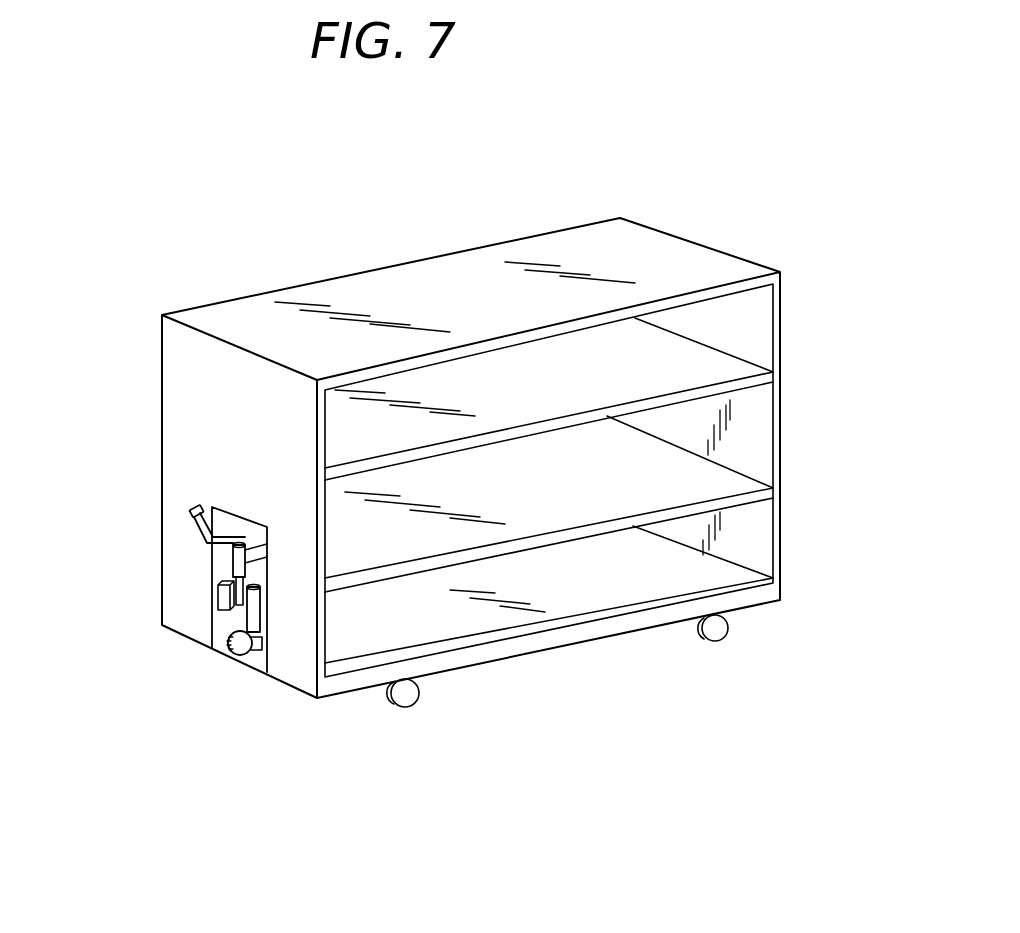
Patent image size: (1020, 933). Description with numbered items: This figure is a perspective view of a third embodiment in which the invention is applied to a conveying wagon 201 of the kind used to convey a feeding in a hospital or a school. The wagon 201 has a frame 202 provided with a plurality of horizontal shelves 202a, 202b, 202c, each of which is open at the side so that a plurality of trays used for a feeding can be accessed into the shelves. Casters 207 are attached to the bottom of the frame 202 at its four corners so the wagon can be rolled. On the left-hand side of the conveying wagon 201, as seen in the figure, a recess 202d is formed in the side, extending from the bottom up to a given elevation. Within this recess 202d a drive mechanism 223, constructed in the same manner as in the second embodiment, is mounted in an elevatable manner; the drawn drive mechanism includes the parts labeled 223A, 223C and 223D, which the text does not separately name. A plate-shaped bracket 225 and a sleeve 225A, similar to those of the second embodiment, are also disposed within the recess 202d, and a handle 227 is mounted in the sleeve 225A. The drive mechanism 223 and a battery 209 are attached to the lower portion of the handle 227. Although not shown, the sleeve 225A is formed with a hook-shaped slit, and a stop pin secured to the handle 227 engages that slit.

The conveying wagon 201 is at (210, 248).
The frame 202 is at (447, 286).
The horizontal shelf 202a is at (737, 367).
The horizontal shelf 202b is at (727, 479).
The horizontal shelf 202c is at (730, 583).
The recess 202d is at (258, 660).
The casters 207 is at (717, 636).
The battery 209 is at (220, 606).
The drive mechanism 223 is at (240, 668).
The pipe 223A is at (262, 618).
The knob 223C is at (227, 657).
The connector 223D is at (196, 508).
The plate-shaped bracket 225 is at (238, 543).
The sleeve 225A is at (228, 570).
The handle 227 is at (205, 531).